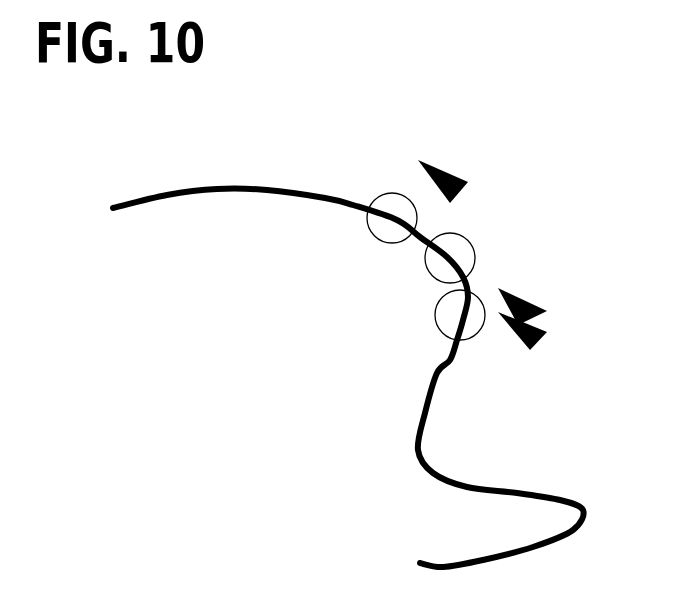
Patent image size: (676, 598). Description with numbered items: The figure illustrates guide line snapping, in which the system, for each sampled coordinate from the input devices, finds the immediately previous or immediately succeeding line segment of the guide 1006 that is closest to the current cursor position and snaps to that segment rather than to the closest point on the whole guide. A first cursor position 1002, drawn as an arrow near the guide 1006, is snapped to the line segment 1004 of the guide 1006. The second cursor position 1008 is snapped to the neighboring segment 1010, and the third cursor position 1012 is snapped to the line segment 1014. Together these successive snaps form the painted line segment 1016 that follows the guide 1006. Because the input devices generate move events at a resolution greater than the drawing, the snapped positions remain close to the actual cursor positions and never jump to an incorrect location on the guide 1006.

The first cursor position 1002 is at (450, 173).
The line segment 1004 is at (373, 230).
The guide 1006 is at (215, 186).
The second cursor position 1008 is at (500, 288).
The segment 1010 is at (475, 252).
The third cursor position 1012 is at (535, 346).
The line segment 1014 is at (476, 323).
The painted line segment 1016 is at (421, 238).